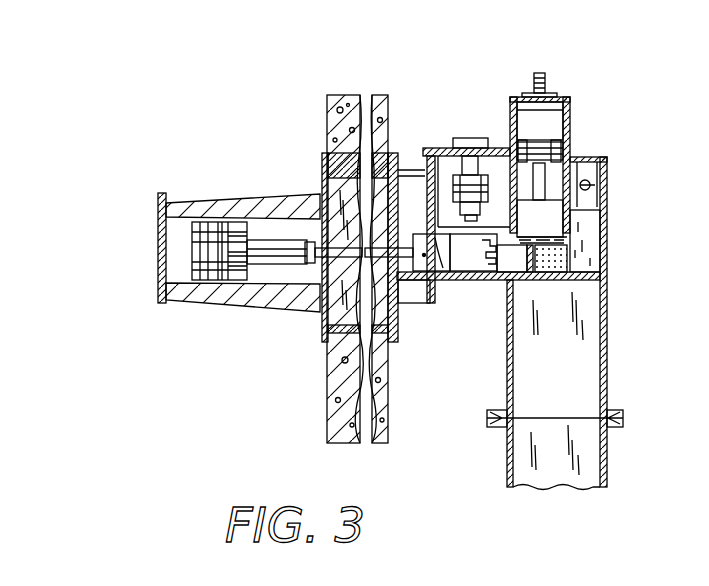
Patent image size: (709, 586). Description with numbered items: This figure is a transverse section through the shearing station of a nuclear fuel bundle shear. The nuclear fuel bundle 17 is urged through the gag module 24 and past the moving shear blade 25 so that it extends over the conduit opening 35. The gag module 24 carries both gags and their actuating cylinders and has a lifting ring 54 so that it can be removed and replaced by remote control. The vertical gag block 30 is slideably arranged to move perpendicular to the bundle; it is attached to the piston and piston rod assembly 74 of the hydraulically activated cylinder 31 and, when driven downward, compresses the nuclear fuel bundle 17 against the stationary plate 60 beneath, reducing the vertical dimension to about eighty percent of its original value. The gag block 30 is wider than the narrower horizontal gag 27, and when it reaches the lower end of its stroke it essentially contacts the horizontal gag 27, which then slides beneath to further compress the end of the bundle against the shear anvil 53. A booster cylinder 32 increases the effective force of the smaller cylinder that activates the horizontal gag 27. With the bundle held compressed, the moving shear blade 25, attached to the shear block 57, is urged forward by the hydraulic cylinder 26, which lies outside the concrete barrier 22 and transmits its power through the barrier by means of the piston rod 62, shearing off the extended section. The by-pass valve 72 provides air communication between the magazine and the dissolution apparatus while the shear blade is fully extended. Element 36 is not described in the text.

The nuclear fuel bundle 17 is at (557, 263).
The concrete barrier 22 is at (327, 421).
The gag module 24 is at (570, 98).
The moving shear blade 25 is at (472, 263).
The hydraulic cylinder 26 is at (178, 265).
The horizontal gag 27 is at (510, 260).
The gag block 30 is at (543, 225).
The hydraulically activated cylinder 31 is at (552, 120).
The booster cylinder 32 is at (470, 140).
The conduit opening 35 is at (572, 348).
The pin 36 is at (605, 387).
The shear anvil 53 is at (590, 250).
The lifting ring 54 is at (543, 73).
The shear block 57 is at (446, 272).
The stationary plate 60 is at (577, 281).
The piston rod 62 is at (350, 252).
The by-pass valve 72 is at (592, 185).
The piston and piston rod assembly 74 is at (547, 137).